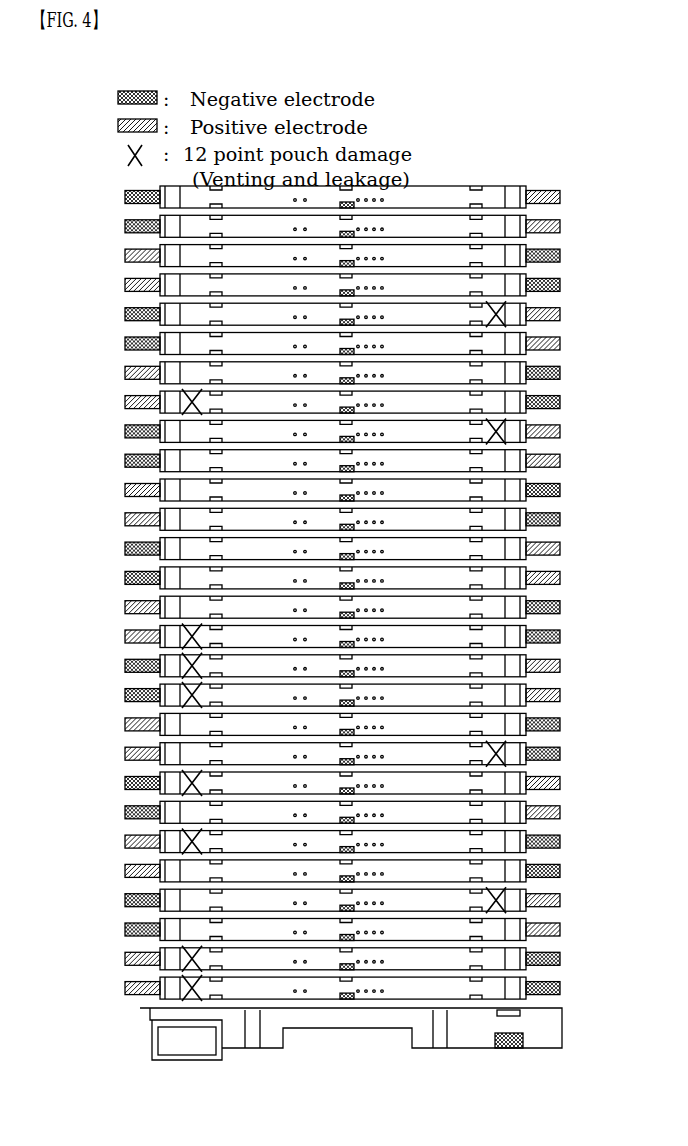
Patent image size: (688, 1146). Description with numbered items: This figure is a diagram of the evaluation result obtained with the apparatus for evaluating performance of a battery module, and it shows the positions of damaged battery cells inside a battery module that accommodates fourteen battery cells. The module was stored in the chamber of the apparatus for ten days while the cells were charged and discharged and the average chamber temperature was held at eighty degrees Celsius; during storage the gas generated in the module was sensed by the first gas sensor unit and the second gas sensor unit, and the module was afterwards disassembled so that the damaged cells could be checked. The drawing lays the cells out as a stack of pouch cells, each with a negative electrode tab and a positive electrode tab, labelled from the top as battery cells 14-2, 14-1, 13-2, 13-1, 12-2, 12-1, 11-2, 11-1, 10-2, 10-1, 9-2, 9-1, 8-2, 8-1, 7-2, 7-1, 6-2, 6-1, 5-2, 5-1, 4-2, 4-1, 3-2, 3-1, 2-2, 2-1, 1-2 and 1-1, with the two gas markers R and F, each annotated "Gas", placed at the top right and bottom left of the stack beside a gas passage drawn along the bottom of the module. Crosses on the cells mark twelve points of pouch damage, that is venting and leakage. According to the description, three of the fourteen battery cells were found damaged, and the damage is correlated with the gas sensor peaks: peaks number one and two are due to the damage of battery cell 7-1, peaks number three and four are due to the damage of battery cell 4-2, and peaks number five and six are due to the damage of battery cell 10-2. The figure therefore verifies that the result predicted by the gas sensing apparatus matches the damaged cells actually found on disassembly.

The battery cell 14-2 is at (366, 198).
The battery cell 14-1 is at (366, 227).
The battery cell 13-2 is at (366, 257).
The battery cell 13-1 is at (366, 286).
The battery cell 12-2 is at (366, 314).
The battery cell 12-1 is at (366, 345).
The battery cell 11-2 is at (366, 374).
The battery cell 11-1 is at (366, 402).
The battery cell 10-2 is at (366, 431).
The battery cell 10-1 is at (366, 462).
The battery cell 9-2 is at (361, 491).
The battery cell 9-1 (labelled 14-1 in drawing) 9-1 is at (366, 520).
The battery cell 8-2 is at (361, 550).
The battery cell 8-1 is at (361, 579).
The battery cell 7-2 is at (361, 608).
The battery cell 7-1 is at (361, 637).
The battery cell 6-2 is at (361, 666).
The battery cell 6-1 is at (361, 695).
The battery cell 5-2 is at (361, 725).
The battery cell 5-1 is at (361, 754).
The battery cell 4-2 is at (361, 783).
The battery cell 4-1 is at (361, 813).
The battery cell 3-2 is at (361, 842).
The battery cell 3-1 is at (361, 872).
The battery cell 2-2 is at (361, 900).
The battery cell 2-1 is at (361, 931).
The battery cell 1-2 is at (361, 959).
The battery cell 1-1 is at (361, 988).
The rear gas outlet R is at (561, 169).
The front gas outlet F is at (123, 1025).